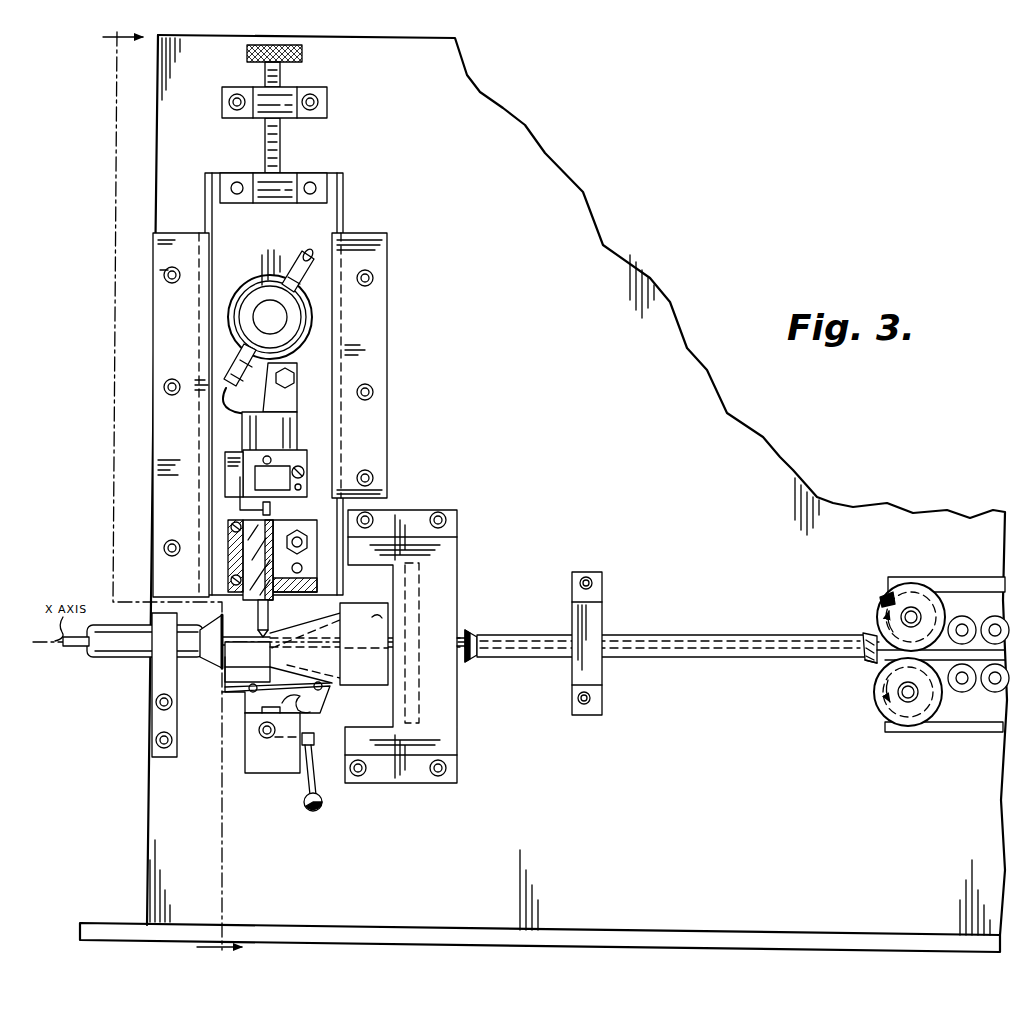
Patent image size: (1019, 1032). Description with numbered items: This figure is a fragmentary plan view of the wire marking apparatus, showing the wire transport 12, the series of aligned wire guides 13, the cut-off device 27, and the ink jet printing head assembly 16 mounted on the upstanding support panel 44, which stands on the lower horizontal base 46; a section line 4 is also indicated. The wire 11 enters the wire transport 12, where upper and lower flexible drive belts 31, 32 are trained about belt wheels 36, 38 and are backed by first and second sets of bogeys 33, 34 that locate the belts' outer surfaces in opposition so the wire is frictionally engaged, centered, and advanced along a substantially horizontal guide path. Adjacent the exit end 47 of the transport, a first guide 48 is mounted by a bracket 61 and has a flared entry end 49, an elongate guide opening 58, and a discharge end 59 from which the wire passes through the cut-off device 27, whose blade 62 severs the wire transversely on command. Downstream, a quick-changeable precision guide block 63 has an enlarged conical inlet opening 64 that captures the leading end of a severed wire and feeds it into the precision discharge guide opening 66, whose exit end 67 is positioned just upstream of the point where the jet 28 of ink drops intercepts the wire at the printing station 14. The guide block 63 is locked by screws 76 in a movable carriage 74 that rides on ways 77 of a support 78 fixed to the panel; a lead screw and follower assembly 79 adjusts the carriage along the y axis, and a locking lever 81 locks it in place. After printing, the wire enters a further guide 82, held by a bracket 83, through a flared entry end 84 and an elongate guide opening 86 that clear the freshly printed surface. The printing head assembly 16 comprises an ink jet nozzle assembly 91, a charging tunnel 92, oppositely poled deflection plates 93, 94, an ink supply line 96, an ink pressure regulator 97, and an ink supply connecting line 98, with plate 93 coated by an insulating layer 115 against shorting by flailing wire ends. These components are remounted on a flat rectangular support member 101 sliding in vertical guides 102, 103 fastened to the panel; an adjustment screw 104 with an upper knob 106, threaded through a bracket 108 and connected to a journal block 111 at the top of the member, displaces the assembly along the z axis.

The section line 4- 4 is at (165, 491).
The wire 11 is at (67, 647).
The wire transport 12 is at (917, 731).
The wire guides 13 is at (193, 675).
The electrostatic ink jet printing station 14 is at (243, 613).
The ink jet printing head assembly 16 is at (397, 277).
The cut-off device 27 is at (460, 548).
The jet 28 is at (270, 615).
The upper flexible drive belt 31 is at (946, 585).
The lower flexible drive belt 32 is at (950, 733).
The first set of bogeys 33 is at (993, 616).
The second set of bogeys 34 is at (993, 692).
The belt wheel 36 is at (908, 584).
The belt wheel 38 is at (893, 706).
The upstanding support panel 44 is at (147, 827).
The lower horizontal base 46 is at (80, 923).
The exit end 47 is at (880, 665).
The first guide 48 is at (650, 635).
The flared entry end 49 is at (868, 636).
The elongate guide opening 58 is at (690, 656).
The discharge end 59 is at (470, 628).
The bracket 61 is at (604, 607).
The cut-off blade 62 is at (420, 596).
The guide block 63 is at (343, 603).
The conical inlet opening 64 is at (378, 600).
The precision discharge guide opening 66 is at (283, 660).
The exit end 67 is at (235, 648).
The movable carriage 74 is at (325, 706).
The screws 76 is at (253, 692).
The ways 77 is at (300, 712).
The support 78 is at (280, 775).
The lead screw and follower assembly 79 is at (266, 745).
The locking lever 81 is at (323, 793).
The further guide 82 is at (103, 657).
The bracket 83 is at (152, 672).
The flared entry end 84 is at (237, 612).
The guide opening 86 is at (113, 630).
The ink jet nozzle assembly 91 is at (302, 457).
The charging tunnel 92 is at (280, 506).
The deflection plate 93 is at (340, 520).
The deflection plate 94 is at (230, 543).
The ink supply line 96 is at (312, 257).
The ink pressure regulator 97 is at (293, 320).
The ink supply connecting line 98 is at (280, 401).
The support member 101 is at (347, 193).
The guide 102 is at (175, 233).
The guide 103 is at (375, 233).
The adjustment screw 104 is at (295, 87).
The adjustment knob 106 is at (304, 55).
The bracket 108 is at (302, 113).
The journal block 111 is at (290, 176).
The layer of electrically insulating material 115 is at (300, 590).